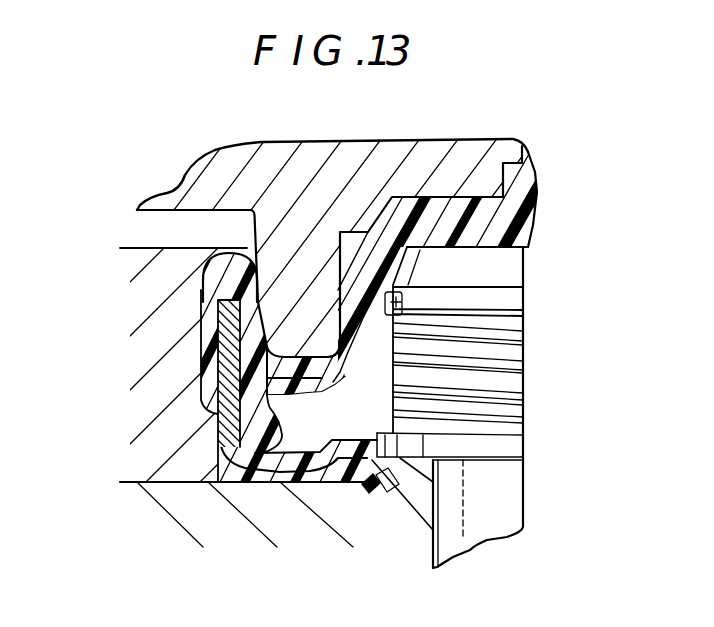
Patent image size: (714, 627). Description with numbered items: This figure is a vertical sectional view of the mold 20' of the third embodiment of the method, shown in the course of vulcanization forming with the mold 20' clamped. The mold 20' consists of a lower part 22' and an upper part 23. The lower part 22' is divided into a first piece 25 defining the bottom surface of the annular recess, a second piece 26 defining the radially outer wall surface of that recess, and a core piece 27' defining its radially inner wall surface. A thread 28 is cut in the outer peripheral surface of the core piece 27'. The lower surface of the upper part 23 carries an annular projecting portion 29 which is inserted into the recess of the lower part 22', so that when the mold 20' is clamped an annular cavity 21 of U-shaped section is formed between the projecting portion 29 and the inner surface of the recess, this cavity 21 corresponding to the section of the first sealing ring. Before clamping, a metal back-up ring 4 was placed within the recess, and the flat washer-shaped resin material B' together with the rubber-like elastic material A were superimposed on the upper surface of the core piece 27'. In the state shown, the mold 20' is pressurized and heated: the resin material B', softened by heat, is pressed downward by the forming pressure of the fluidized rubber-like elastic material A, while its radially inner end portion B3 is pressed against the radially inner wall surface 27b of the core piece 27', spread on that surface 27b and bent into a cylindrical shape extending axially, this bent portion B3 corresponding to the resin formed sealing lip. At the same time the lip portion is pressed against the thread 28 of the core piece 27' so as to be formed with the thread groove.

The mold 20' is at (291, 256).
The annular cavity 21 is at (322, 441).
The lower part 22' is at (235, 514).
The upper part 23 is at (353, 192).
The first piece 25 is at (350, 529).
The second piece 26 is at (217, 365).
The core piece 27' is at (488, 407).
The radially inner wall surface 27b is at (498, 340).
The thread 28 is at (486, 381).
The annular projecting portion 29 is at (159, 277).
The metal back-up ring 4 is at (161, 386).
The rubber-like elastic material A is at (316, 295).
The resin material B' is at (347, 390).
The radially inner end portion B3 is at (493, 270).